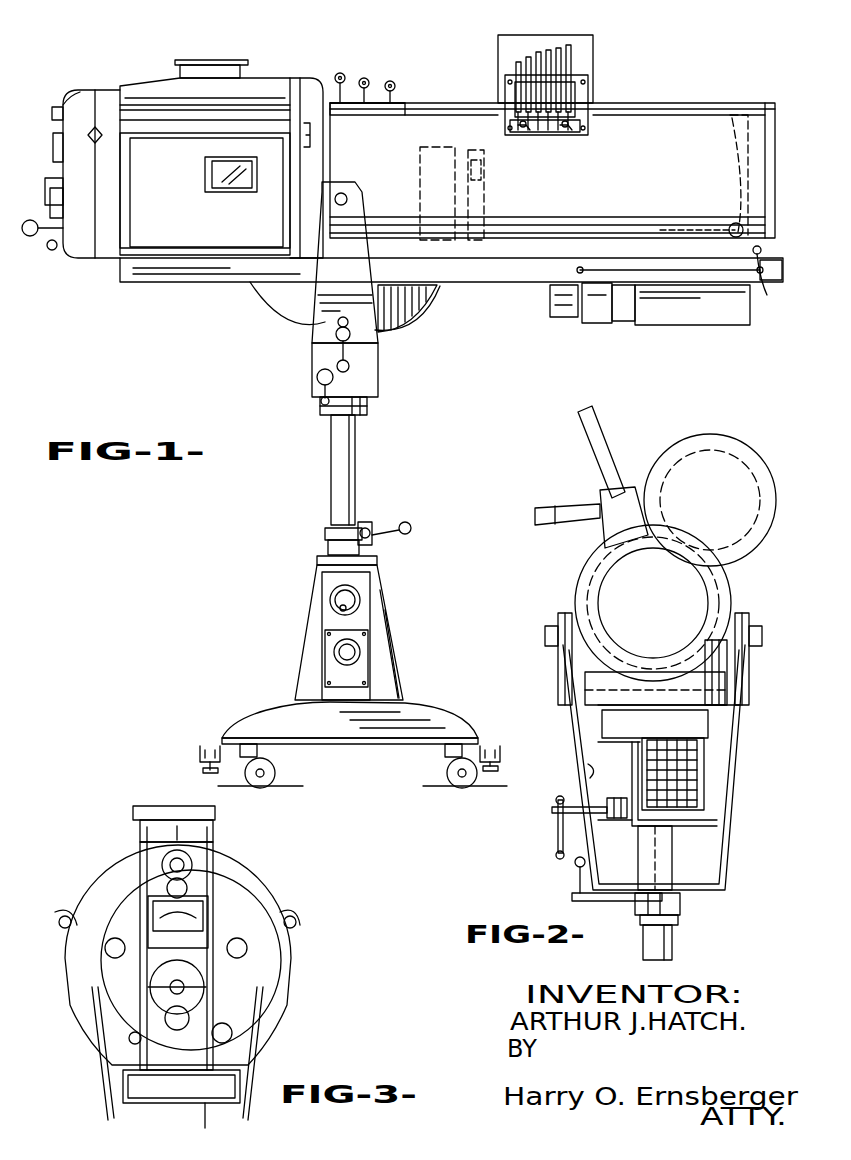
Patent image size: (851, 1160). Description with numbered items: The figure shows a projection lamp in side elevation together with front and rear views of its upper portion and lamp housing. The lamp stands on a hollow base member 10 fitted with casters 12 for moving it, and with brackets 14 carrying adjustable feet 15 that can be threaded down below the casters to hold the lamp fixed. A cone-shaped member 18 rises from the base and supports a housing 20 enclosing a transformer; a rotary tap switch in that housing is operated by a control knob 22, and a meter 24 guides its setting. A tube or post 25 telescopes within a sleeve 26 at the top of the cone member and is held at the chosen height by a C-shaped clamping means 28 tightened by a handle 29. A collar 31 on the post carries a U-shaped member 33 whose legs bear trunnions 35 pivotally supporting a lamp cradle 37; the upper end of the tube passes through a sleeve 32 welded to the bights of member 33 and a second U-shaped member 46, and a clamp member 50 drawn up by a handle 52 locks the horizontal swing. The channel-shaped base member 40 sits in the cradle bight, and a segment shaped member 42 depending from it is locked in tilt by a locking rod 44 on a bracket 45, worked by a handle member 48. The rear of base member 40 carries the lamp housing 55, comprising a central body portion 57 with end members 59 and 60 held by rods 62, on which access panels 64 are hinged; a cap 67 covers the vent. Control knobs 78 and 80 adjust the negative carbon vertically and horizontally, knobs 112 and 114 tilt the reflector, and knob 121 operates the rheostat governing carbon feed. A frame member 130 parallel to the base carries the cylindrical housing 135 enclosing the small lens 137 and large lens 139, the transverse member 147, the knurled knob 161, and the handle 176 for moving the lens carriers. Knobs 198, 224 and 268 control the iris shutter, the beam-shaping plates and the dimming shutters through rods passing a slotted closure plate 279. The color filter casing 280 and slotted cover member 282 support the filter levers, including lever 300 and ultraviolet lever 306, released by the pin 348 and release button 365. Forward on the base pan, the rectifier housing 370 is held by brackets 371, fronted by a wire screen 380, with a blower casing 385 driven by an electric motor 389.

In FIG. 1, the hollow base member 10 is at (262, 700).
In FIG. 1, the casters 12 is at (276, 770).
In FIG. 1, the brackets 14 is at (212, 745).
In FIG. 1, the adjustable pads or feet 15 is at (203, 771).
In FIG. 1, the cone-shaped member 18 is at (388, 615).
In FIG. 1, the housing 20 is at (363, 590).
In FIG. 1, the control knob 22 is at (342, 652).
In FIG. 1, the meter 24 is at (333, 602).
In FIG. 1, the tube or post 25 is at (331, 445).
In FIG. 2, the tube or post 25 is at (673, 955).
In FIG. 1, the sleeve 26 is at (328, 528).
In FIG. 1, the clamping means 28 is at (369, 520).
In FIG. 1, the handle 29 is at (407, 521).
In FIG. 1, the collar 31 is at (320, 410).
In FIG. 2, the collar 31 is at (678, 922).
In FIG. 2, the sleeve 32 is at (672, 875).
In FIG. 1, the U-shaped member 33 is at (318, 342).
In FIG. 2, the U-shaped member 33 is at (733, 812).
In FIG. 3, the U-shaped member 33 is at (92, 1078).
In FIG. 1, the trunnions 35 is at (334, 201).
In FIG. 2, the trunnions 35 is at (558, 628).
In FIG. 1, the lamp supporting cradle 37 is at (385, 300).
In FIG. 2, the lamp supporting cradle 37 is at (728, 722).
In FIG. 1, the channel shaped frame or base member 40 is at (520, 275).
In FIG. 2, the channel shaped frame or base member 40 is at (710, 737).
In FIG. 3, the channel shaped frame or base member 40 is at (242, 1072).
In FIG. 1, the segment shaped member 42 is at (275, 312).
In FIG. 2, the segment shaped member 42 is at (634, 782).
In FIG. 2, the locking rod 44 is at (556, 842).
In FIG. 2, the bracket 45 is at (607, 822).
In FIG. 2, the second U-shaped member 46 is at (588, 768).
In FIG. 2, the handle member 48 is at (556, 858).
In FIG. 2, the clamp member 50 is at (682, 902).
In FIG. 2, the handle 52 is at (572, 890).
In FIG. 1, the lamp housing or casing 55 is at (266, 74).
In FIG. 1, the central body portion 57 is at (128, 92).
In FIG. 1, the end member 59 is at (305, 82).
In FIG. 1, the rear closure member 60 is at (100, 92).
In FIG. 1, the longitudinally extending rods 62 is at (143, 134).
In FIG. 3, the longitudinally extending rods 62 is at (60, 930).
In FIG. 1, the access door or panel 64 is at (173, 186).
In FIG. 3, the access door or panel 64 is at (288, 1000).
In FIG. 1, the cap 67 is at (208, 62).
In FIG. 3, the cap 67 is at (148, 806).
In FIG. 3, the control knob 78 is at (165, 1022).
In FIG. 3, the control knob 80 is at (248, 949).
In FIG. 3, the control knob 112 is at (186, 889).
In FIG. 3, the control knob 114 is at (110, 940).
In FIG. 3, the control knob 121 is at (170, 862).
In FIG. 1, the frame member 130 is at (552, 255).
In FIG. 2, the frame member 130 is at (610, 697).
In FIG. 2, the cylindrically-shaped casing or housing 135 is at (578, 577).
In FIG. 1, the small lens 137 is at (446, 150).
In FIG. 1, the large lens 139 is at (730, 152).
In FIG. 2, the transversely extending member 147 is at (720, 672).
In FIG. 1, the knurled manipulating knob 161 is at (778, 284).
In FIG. 1, the handle 176 is at (730, 224).
In FIG. 1, the manipulating knob 198 is at (395, 86).
In FIG. 1, the manipulating knob 224 is at (366, 78).
In FIG. 1, the manipulating knob 268 is at (340, 73).
In FIG. 1, the closure plate 279 is at (405, 112).
In FIG. 1, the color filter enclosure or casing 280 is at (583, 42).
In FIG. 2, the color filter enclosure or casing 280 is at (724, 420).
In FIG. 1, the slotted cover member 282 is at (585, 122).
In FIG. 2, the slotted cover member 282 is at (626, 478).
In FIG. 1, the lever or holder 300 is at (514, 66).
In FIG. 1, the lever 306 is at (575, 74).
In FIG. 1, the pin 348 is at (532, 138).
In FIG. 1, the release button 365 is at (570, 135).
In FIG. 1, the rectifier casing or housing 370 is at (706, 330).
In FIG. 2, the rectifier casing or housing 370 is at (705, 793).
In FIG. 2, the brackets 371 is at (694, 745).
In FIG. 2, the open mesh wire screen 380 is at (700, 770).
In FIG. 1, the blower casing 385 is at (603, 326).
In FIG. 1, the electric motor 389 is at (566, 320).